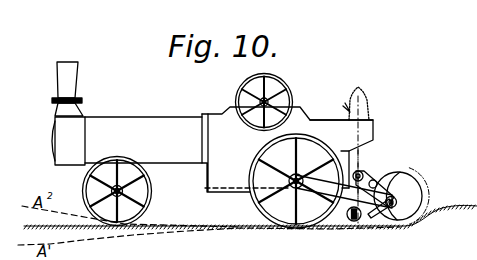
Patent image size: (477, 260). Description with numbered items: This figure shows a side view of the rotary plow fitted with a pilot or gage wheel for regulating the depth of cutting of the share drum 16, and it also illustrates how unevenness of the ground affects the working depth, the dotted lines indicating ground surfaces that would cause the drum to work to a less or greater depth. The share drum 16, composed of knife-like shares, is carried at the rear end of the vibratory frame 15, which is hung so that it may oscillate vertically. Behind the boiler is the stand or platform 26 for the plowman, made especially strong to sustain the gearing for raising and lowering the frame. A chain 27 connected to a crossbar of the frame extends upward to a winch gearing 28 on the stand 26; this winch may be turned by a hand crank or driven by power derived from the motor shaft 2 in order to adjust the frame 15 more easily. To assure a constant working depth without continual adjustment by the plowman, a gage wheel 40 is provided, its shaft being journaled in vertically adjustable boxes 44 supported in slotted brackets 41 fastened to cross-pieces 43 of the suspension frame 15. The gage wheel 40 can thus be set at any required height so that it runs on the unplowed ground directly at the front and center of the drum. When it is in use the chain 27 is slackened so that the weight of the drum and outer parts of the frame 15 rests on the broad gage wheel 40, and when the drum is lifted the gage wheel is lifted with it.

The motor shaft 2 is at (264, 102).
The vibratory frame 15 is at (296, 181).
The share drum 16 is at (424, 193).
The stand or platform 26 is at (341, 131).
The chain 27 is at (359, 158).
The winch gearing 28 is at (372, 92).
The gage wheel 40 is at (356, 222).
The slotted brackets 41 is at (344, 191).
The cross-pieces 43 is at (375, 189).
The vertically adjustable boxes 44 is at (370, 224).